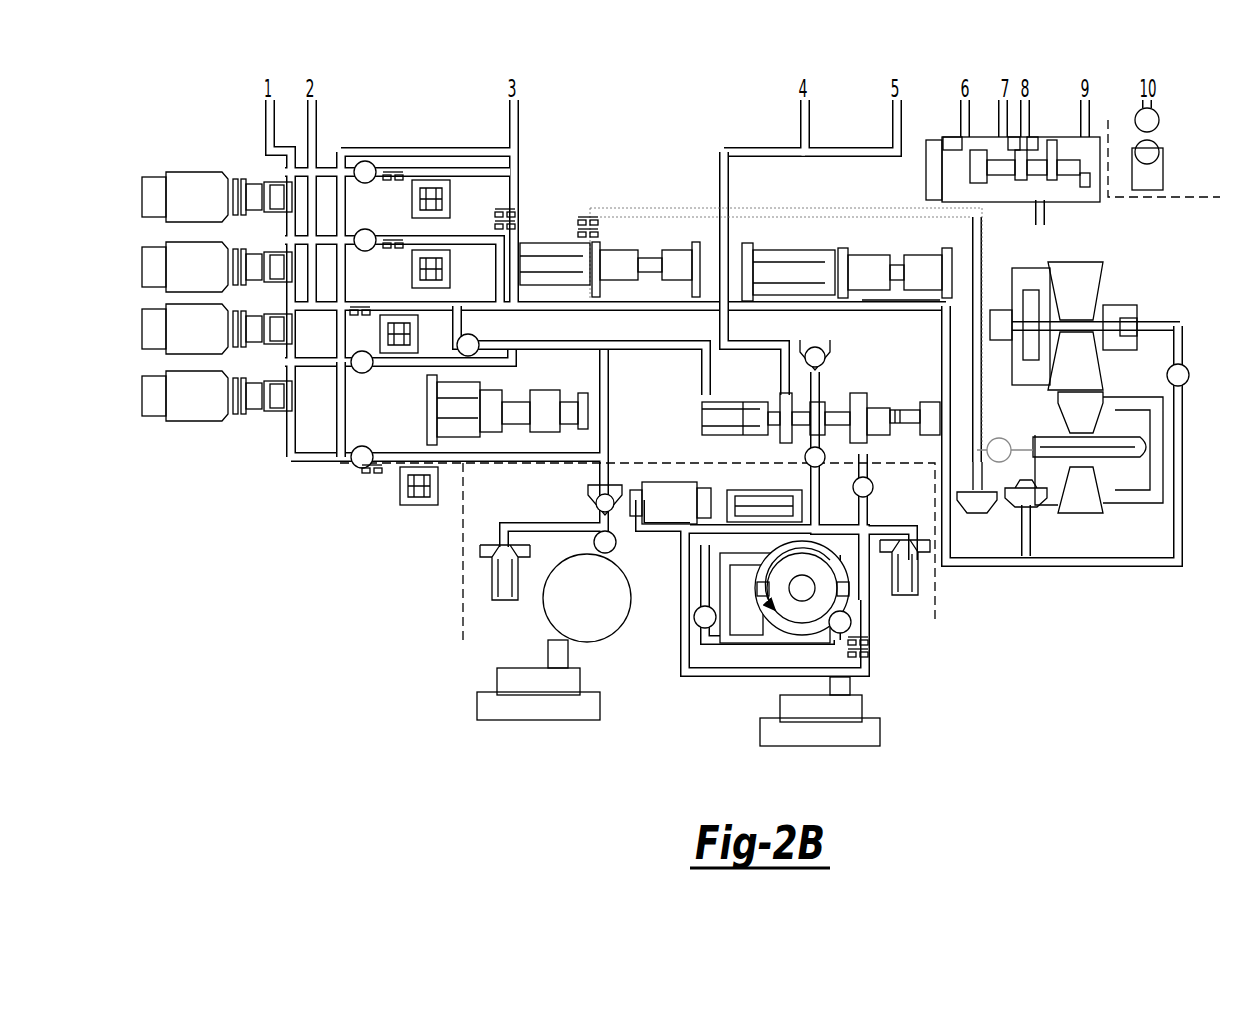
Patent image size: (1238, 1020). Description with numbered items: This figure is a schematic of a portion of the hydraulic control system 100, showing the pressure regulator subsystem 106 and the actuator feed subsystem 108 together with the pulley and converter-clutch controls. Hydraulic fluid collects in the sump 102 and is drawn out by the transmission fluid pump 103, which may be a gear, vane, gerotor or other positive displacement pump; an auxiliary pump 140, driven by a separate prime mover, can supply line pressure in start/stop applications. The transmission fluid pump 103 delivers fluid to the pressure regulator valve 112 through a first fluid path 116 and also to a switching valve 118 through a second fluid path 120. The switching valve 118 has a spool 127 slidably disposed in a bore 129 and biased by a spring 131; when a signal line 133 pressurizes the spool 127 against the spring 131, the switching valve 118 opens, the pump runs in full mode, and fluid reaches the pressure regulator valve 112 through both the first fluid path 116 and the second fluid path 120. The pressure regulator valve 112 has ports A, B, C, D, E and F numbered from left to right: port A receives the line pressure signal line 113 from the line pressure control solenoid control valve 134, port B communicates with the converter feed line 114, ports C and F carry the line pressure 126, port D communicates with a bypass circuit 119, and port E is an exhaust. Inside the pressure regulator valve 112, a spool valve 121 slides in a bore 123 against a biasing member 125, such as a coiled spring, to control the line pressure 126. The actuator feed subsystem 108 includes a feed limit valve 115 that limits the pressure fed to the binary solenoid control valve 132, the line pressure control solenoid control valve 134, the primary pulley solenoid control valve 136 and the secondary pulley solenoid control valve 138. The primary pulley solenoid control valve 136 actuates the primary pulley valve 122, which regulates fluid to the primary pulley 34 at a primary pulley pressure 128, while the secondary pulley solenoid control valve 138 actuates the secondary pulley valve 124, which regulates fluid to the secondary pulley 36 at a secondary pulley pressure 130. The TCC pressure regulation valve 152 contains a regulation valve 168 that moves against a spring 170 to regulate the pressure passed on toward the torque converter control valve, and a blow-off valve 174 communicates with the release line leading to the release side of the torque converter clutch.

The primary pulley 34 is at (1140, 298).
The secondary pulley 36 is at (1112, 520).
The hydraulic control system 100 is at (286, 528).
The sump 102 is at (477, 705).
The transmission fluid pump 103 is at (790, 547).
The pressure regulator subsystem 106 is at (690, 409).
The actuator feed subsystem 108 is at (452, 447).
The pressure regulator valve 112 is at (898, 438).
The line pressure signal line 113 is at (505, 343).
The converter feed line 114 is at (766, 348).
The feed limit valve 115 is at (420, 432).
The first fluid path 116 is at (818, 490).
The switching valve 118 is at (667, 540).
The bypass circuit 119 is at (868, 643).
The second fluid path 120 is at (700, 645).
The spool valve 121 is at (770, 437).
The primary pulley valve 122 is at (851, 247).
The bore 123 is at (888, 402).
The secondary pulley valve 124 is at (598, 207).
The biasing member 125 is at (705, 430).
The line pressure 126 is at (887, 330).
The spool 127 is at (672, 484).
The primary pulley pressure 128 is at (1067, 567).
The bore 129 is at (600, 521).
The secondary pulley pressure 130 is at (978, 258).
The biasing member 131 is at (755, 495).
The binary solenoid control valve 132 is at (142, 397).
The signal line 133 is at (288, 447).
The line pressure control solenoid control valve 134 is at (142, 330).
The primary pulley solenoid control valve 136 is at (142, 267).
The secondary pulley solenoid control valve 138 is at (142, 199).
The auxiliary pump 140 is at (563, 614).
The TCC pressure regulation valve 152 is at (1082, 205).
The regulation valve 168 is at (1040, 202).
The spring 170 is at (1085, 200).
The blow-off valve 174 is at (1165, 172).
The port A is at (703, 368).
The port B is at (795, 398).
The port C is at (822, 382).
The port D is at (848, 440).
The port E is at (870, 492).
The port F is at (945, 436).